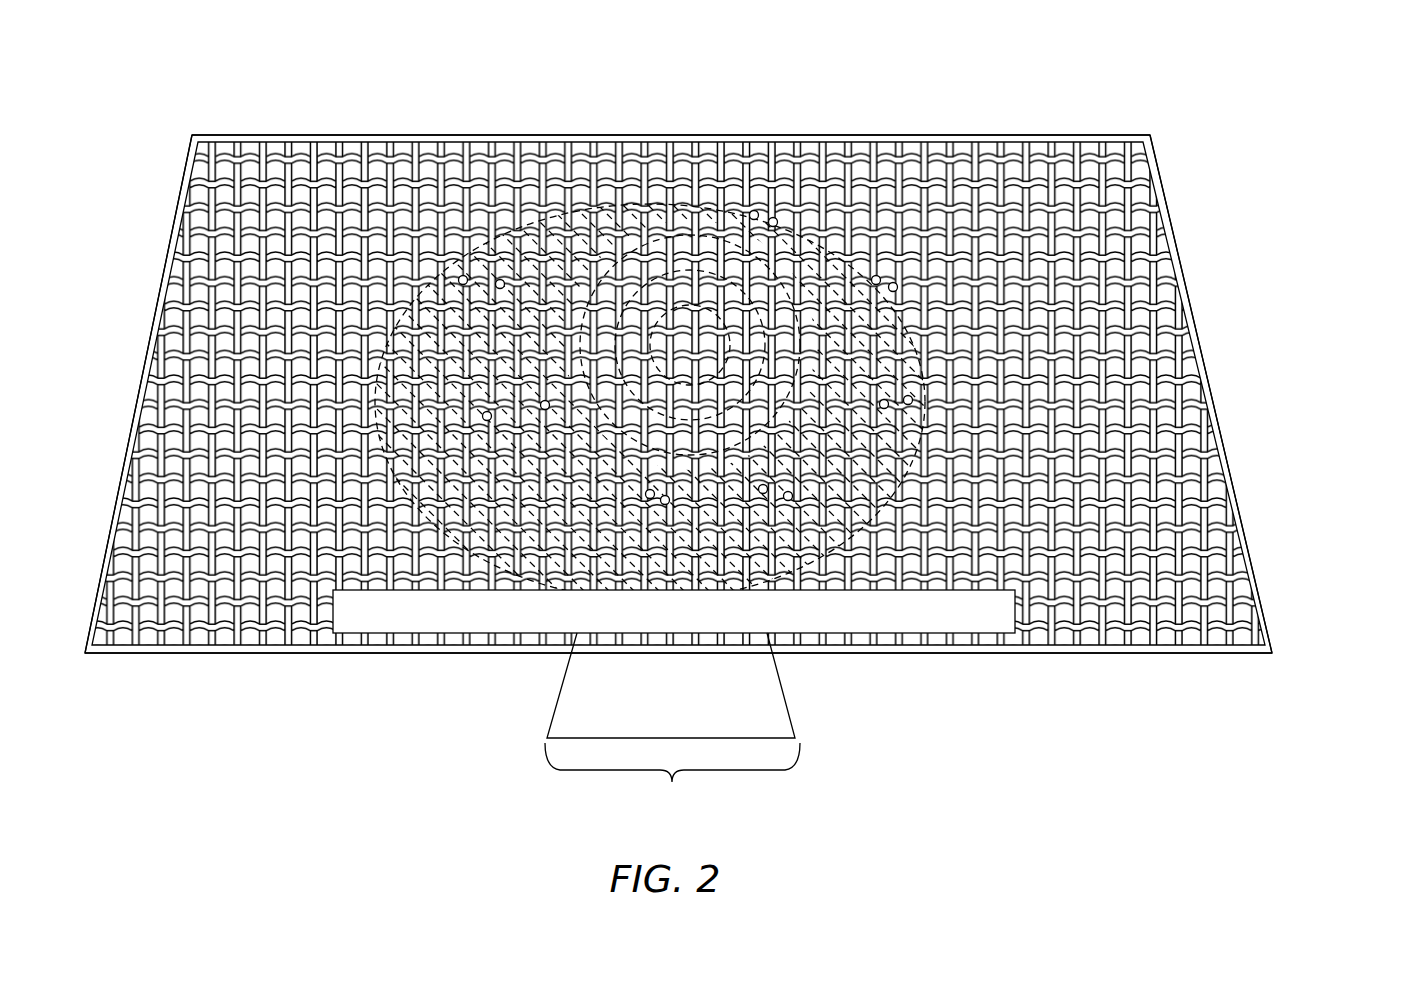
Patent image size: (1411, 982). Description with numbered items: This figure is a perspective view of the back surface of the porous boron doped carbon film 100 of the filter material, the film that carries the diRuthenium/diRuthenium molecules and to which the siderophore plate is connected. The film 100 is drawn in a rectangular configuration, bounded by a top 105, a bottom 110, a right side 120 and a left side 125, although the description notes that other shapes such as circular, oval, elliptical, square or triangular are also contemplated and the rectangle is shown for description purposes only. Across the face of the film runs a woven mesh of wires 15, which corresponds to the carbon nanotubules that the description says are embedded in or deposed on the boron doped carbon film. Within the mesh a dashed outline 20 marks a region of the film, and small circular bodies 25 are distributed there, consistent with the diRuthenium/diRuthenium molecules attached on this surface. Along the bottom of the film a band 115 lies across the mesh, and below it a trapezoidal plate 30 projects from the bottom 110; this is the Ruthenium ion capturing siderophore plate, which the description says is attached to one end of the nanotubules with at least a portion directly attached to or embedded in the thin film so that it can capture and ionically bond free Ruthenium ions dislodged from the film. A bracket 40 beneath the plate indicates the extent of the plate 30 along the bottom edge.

The woven mesh panel 100 is at (1298, 481).
The wires of woven mesh 15 is at (290, 180).
The dashed region outline 20 is at (940, 305).
The small circular apertures 25 is at (878, 280).
The top edge 105 is at (695, 135).
The bottom edge 110 is at (1075, 655).
The left edge 120 is at (152, 310).
The right edge 125 is at (1195, 300).
The strip 115 is at (417, 617).
The tab 30 is at (673, 720).
The tab width 40 is at (672, 782).